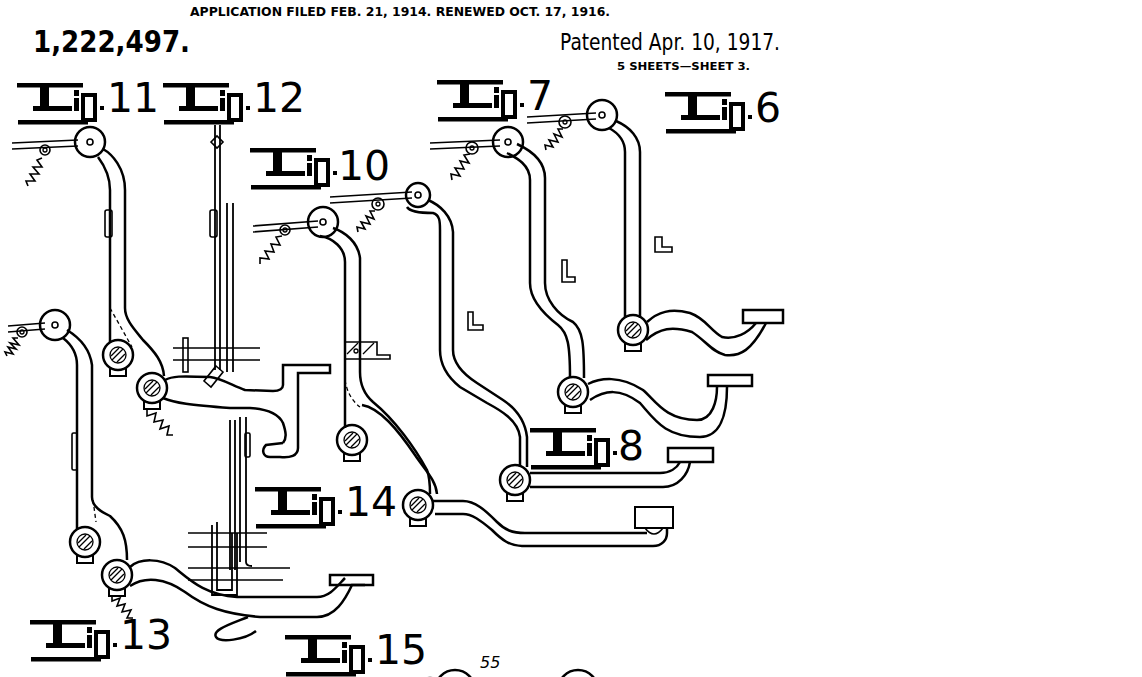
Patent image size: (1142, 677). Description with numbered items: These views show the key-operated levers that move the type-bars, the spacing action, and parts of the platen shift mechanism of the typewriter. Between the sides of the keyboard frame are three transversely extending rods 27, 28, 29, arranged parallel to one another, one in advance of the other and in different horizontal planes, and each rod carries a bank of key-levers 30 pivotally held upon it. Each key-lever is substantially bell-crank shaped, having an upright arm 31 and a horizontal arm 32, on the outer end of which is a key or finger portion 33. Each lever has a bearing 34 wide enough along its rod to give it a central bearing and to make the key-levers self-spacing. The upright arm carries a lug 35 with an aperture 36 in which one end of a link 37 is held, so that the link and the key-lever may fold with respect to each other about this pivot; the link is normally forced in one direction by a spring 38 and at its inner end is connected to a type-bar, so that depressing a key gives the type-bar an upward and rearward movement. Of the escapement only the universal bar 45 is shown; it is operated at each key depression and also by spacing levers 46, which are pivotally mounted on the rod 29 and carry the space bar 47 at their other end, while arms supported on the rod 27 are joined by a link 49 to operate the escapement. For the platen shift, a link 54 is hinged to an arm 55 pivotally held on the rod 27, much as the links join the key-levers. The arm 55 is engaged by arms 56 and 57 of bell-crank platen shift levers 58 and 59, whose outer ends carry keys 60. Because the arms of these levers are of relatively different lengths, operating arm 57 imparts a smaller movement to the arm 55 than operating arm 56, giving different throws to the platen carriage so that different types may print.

In FIG. 11, the transverse rod 27 is at (108, 369).
In FIG. 13, the transverse rod 27 is at (72, 545).
In FIG. 10, the transverse rod 27 is at (338, 446).
In FIG. 6, the transverse rod 27 is at (641, 341).
In FIG. 11, the transverse rod 28 is at (143, 398).
In FIG. 13, the transverse rod 28 is at (100, 584).
In FIG. 7, the transverse rod 28 is at (561, 381).
In FIG. 10, the transverse rod 29 is at (428, 521).
In FIG. 8, the transverse rod 29 is at (502, 473).
In FIG. 6, the key-lever 30 is at (663, 278).
In FIG. 8, the upright arm 31 is at (456, 280).
In FIG. 7, the upright arm 31 is at (549, 233).
In FIG. 6, the upright arm 31 is at (641, 174).
In FIG. 8, the horizontal arm 32 is at (583, 482).
In FIG. 7, the horizontal arm 32 is at (647, 409).
In FIG. 6, the horizontal arm 32 is at (685, 313).
In FIG. 6, the key or finger portion 33 is at (760, 309).
In FIG. 6, the bearing 34 is at (624, 340).
In FIG. 8, the lug 35 is at (432, 188).
In FIG. 7, the lug 35 is at (503, 136).
In FIG. 6, the lug 35 is at (618, 111).
In FIG. 8, the aperture 36 is at (412, 185).
In FIG. 7, the aperture 36 is at (508, 156).
In FIG. 6, the aperture 36 is at (605, 107).
In FIG. 8, the link 37 is at (390, 206).
In FIG. 7, the link 37 is at (458, 148).
In FIG. 6, the link 37 is at (550, 118).
In FIG. 8, the spring 38 is at (372, 216).
In FIG. 7, the spring 38 is at (466, 170).
In FIG. 6, the spring 38 is at (558, 141).
In FIG. 10, the universal bar 45 is at (380, 350).
In FIG. 8, the universal bar 45 is at (484, 326).
In FIG. 7, the universal bar 45 is at (573, 283).
In FIG. 6, the universal bar 45 is at (666, 244).
In FIG. 10, the spacing lever 46 is at (578, 540).
In FIG. 10, the space bar 47 is at (670, 507).
In FIG. 10, the link 49 is at (270, 220).
In FIG. 11, the link 54 is at (70, 148).
In FIG. 13, the link 54 is at (36, 336).
In FIG. 11, the arm 55 is at (112, 155).
In FIG. 12, the arm 55 is at (213, 241).
In FIG. 13, the arm 55 is at (76, 380).
In FIG. 14, the arm 55 is at (249, 458).
In FIG. 11, the arm 56 is at (105, 222).
In FIG. 12, the arm 56 is at (221, 283).
In FIG. 13, the arm 57 is at (71, 446).
In FIG. 14, the arm 57 is at (230, 452).
In FIG. 11, the platen shift lever 58 is at (208, 390).
In FIG. 13, the platen shift lever 59 is at (173, 577).
In FIG. 11, the key 60 is at (307, 366).
In FIG. 14, the key 60 is at (344, 578).